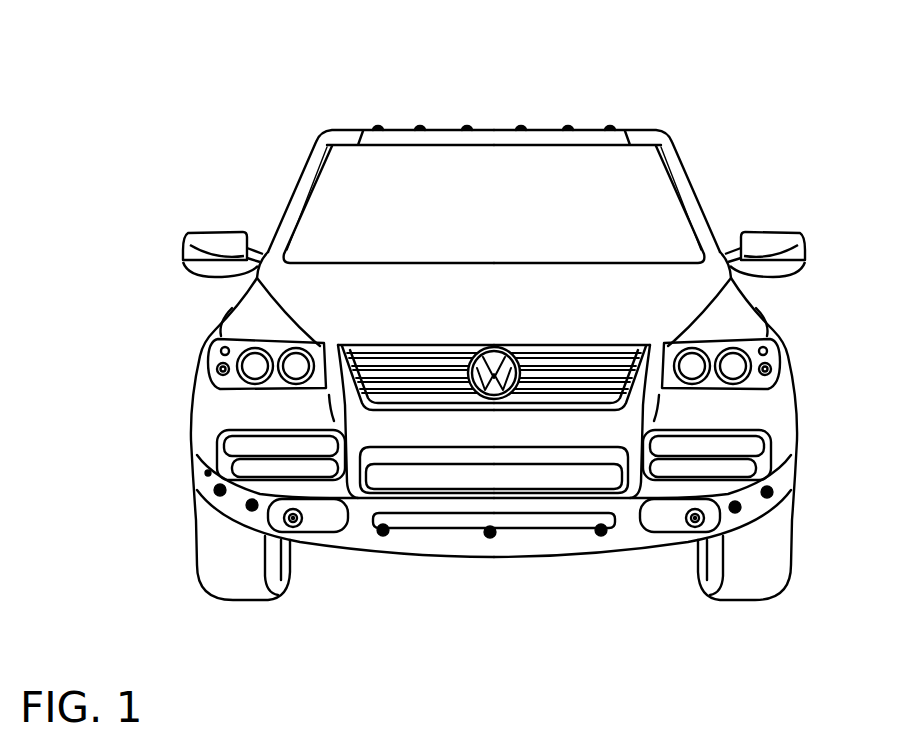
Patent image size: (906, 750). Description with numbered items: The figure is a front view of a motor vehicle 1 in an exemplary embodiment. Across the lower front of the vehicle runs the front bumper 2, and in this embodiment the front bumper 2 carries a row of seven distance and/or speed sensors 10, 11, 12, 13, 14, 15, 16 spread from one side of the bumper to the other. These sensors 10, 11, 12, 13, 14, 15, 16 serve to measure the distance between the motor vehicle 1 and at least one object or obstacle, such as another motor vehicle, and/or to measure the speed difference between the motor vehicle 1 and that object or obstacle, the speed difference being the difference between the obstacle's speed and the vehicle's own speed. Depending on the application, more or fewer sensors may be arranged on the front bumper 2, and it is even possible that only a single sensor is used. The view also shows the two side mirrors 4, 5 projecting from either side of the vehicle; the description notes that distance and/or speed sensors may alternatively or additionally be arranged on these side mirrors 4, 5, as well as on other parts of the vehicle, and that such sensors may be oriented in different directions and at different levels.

The motor vehicle 1 is at (330, 86).
The front bumper 2 is at (206, 476).
The side mirror 4 is at (206, 241).
The side mirror 5 is at (780, 249).
The distance and/or speed sensor 10 is at (220, 492).
The distance and/or speed sensor 11 is at (252, 509).
The distance and/or speed sensor 12 is at (383, 533).
The distance and/or speed sensor 13 is at (490, 535).
The distance and/or speed sensor 14 is at (601, 533).
The distance and/or speed sensor 15 is at (735, 510).
The distance and/or speed sensor 16 is at (769, 495).